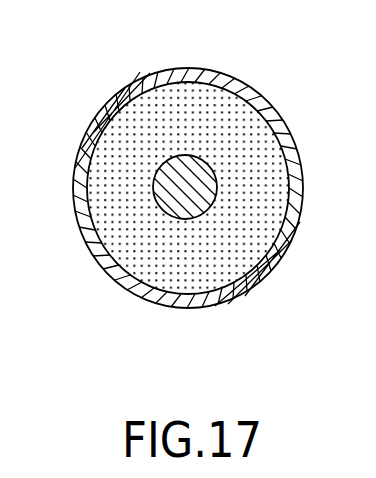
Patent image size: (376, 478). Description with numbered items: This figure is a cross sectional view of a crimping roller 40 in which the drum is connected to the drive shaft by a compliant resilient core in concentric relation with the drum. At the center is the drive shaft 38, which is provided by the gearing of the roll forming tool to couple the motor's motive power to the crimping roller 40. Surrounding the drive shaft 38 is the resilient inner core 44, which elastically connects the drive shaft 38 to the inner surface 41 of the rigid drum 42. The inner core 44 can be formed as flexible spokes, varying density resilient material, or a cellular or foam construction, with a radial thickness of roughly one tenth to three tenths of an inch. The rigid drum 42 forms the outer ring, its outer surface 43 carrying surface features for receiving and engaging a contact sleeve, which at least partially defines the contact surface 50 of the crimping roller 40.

The contact surface 50 is at (118, 85).
The rigid drum 42 is at (94, 128).
The outer surface 43 is at (93, 264).
The crimping roller 40 is at (233, 295).
The inner surface 41 is at (277, 232).
The resilient inner core 44 is at (195, 105).
The drive shaft 38 is at (208, 170).